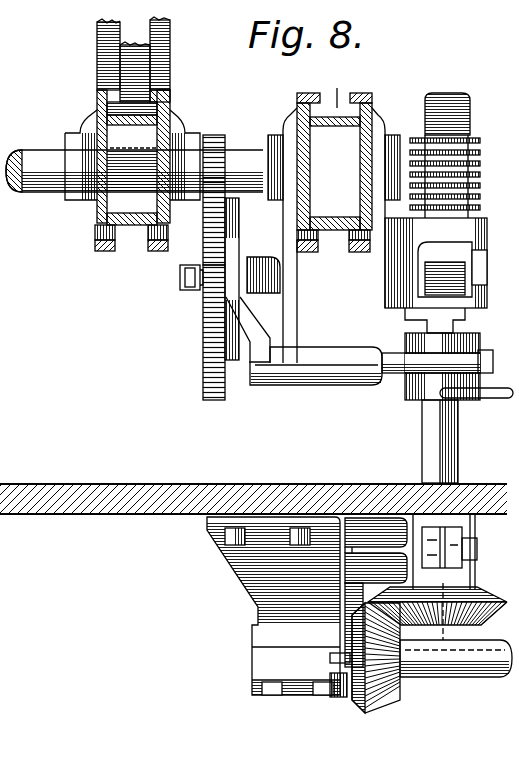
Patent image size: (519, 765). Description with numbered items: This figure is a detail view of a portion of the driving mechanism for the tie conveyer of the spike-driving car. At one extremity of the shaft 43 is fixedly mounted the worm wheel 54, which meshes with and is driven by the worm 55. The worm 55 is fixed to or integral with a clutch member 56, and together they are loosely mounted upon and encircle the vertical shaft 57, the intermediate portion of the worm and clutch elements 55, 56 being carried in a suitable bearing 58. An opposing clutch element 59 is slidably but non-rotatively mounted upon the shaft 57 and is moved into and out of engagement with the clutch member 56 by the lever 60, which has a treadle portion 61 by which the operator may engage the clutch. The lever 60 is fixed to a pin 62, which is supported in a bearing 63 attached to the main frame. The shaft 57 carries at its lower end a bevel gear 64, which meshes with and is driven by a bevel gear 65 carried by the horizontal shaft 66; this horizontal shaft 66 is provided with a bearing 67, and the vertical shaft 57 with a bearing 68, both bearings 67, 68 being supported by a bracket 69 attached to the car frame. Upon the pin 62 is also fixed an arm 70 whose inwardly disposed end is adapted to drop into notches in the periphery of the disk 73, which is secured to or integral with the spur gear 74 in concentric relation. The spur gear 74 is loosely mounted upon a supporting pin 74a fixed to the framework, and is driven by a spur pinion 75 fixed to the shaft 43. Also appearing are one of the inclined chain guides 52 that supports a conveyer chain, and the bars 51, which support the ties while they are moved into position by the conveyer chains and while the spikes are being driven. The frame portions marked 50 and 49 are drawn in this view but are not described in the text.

The shaft 43 is at (40, 192).
The chain guide 52 is at (96, 116).
The spur pinion 75 is at (222, 136).
The arm 70 is at (208, 330).
The spur gear 74 is at (204, 312).
The supporting pin 74a is at (181, 278).
The disk 73 is at (217, 350).
The frame bracket 50 is at (375, 110).
The bars 51 is at (362, 96).
The rod 49 is at (335, 86).
The bearing 63 is at (337, 358).
The pin 62 is at (395, 373).
The worm wheel 54 is at (448, 94).
The worm 55 is at (458, 150).
The bearing 58 is at (435, 297).
The clutch member 56 is at (400, 311).
The clutch element 59 is at (413, 385).
The lever 60 is at (481, 364).
The treadle portion 61 is at (498, 399).
The vertical shaft 57 is at (433, 435).
The bracket 69 is at (258, 570).
The bearing 67 is at (300, 662).
The bearing 68 is at (470, 578).
The bevel gear 64 is at (462, 620).
The bevel gear 65 is at (386, 694).
The horizontal shaft 66 is at (461, 668).